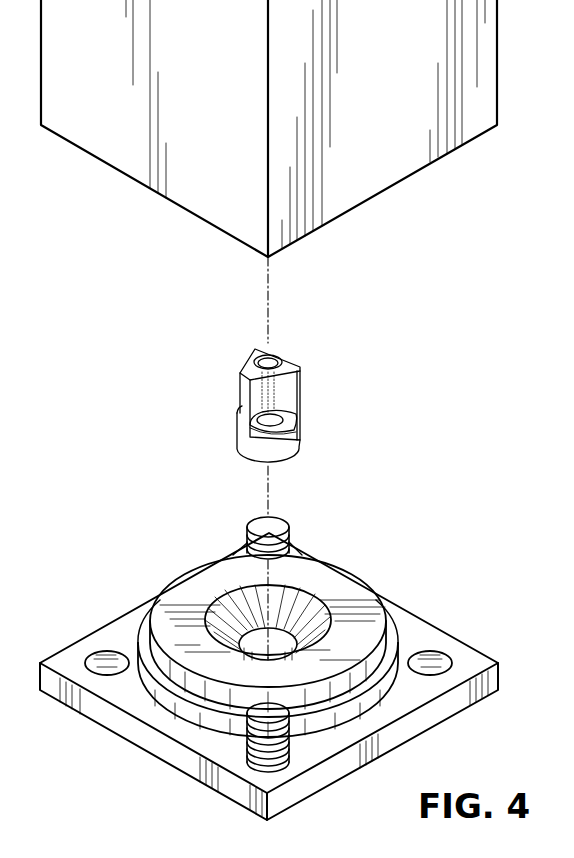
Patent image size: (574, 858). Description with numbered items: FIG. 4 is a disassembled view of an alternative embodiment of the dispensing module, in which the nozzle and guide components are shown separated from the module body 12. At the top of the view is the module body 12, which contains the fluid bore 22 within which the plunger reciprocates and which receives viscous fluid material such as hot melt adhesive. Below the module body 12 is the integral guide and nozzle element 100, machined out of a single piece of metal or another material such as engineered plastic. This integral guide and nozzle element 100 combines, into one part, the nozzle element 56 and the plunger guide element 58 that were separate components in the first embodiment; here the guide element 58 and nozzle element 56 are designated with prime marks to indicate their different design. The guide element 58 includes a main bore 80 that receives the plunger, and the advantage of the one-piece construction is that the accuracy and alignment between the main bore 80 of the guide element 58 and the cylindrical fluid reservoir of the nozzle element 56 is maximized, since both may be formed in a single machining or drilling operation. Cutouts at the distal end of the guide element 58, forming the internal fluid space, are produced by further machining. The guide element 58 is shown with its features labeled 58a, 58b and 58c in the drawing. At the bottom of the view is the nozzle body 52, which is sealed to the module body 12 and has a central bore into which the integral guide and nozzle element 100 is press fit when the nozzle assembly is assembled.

The module body 12 is at (385, 175).
The integral guide and nozzle element 100 is at (269, 376).
The plunger guide element 58 is at (269, 376).
The insert top opening 58a is at (252, 368).
The insert bore 58b is at (300, 364).
The insert seat / ball 58c is at (283, 398).
The main bore 80 is at (265, 357).
The nozzle element 56 is at (298, 441).
The nozzle body 52 is at (93, 630).
The fluid bore 22 is at (225, 610).